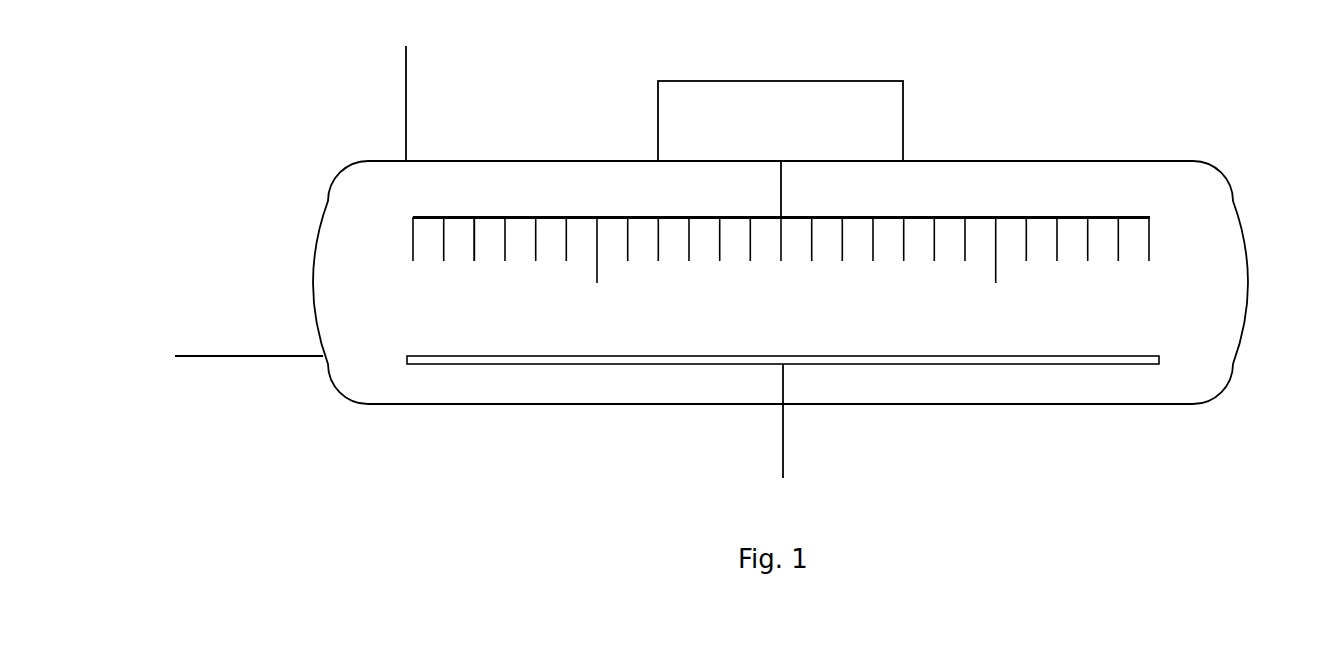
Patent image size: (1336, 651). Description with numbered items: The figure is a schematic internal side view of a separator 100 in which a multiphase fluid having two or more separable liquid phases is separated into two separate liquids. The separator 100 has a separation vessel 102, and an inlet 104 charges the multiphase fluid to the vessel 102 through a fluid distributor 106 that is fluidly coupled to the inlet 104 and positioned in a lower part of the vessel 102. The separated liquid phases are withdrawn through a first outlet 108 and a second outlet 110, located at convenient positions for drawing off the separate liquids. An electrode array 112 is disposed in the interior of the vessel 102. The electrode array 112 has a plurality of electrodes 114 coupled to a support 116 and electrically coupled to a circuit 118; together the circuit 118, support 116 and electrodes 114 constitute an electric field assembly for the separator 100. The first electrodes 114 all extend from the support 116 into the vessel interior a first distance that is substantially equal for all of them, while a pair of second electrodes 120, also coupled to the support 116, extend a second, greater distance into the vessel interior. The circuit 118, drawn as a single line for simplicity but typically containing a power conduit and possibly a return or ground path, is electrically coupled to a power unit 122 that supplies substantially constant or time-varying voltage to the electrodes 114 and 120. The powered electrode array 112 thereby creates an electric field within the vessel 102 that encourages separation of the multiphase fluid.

The separator 100 is at (338, 70).
The separation vessel 102 is at (1228, 189).
The inlet 104 is at (784, 438).
The fluid distributor 106 is at (1056, 356).
The first outlet 108 is at (407, 120).
The second outlet 110 is at (241, 360).
The electrode array 112 is at (412, 235).
The electrodes 114 is at (475, 264).
The support 116 is at (520, 216).
The circuit 118 is at (784, 192).
The pair of electrodes 120 is at (995, 278).
The power unit 122 is at (804, 138).